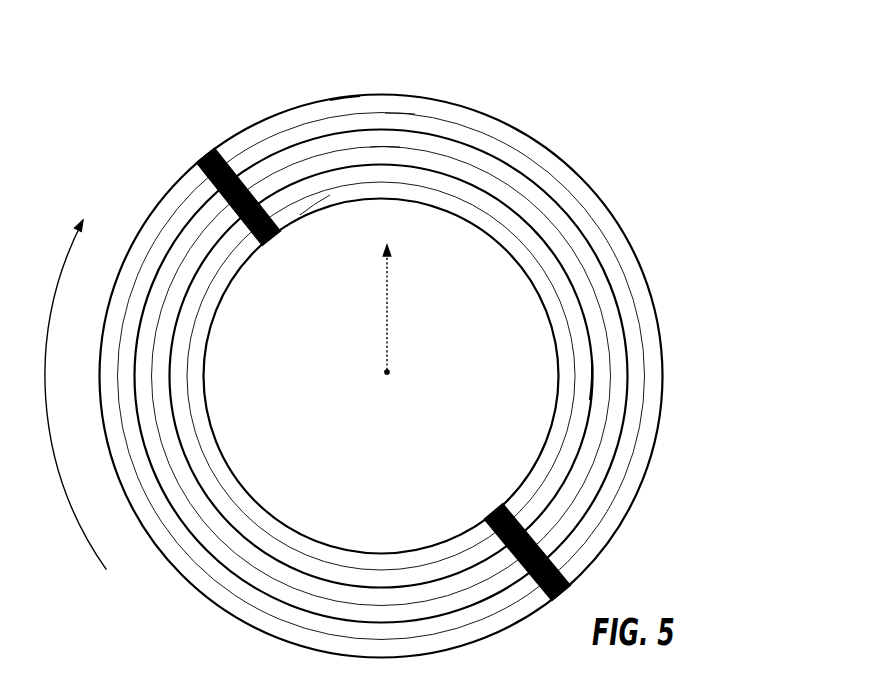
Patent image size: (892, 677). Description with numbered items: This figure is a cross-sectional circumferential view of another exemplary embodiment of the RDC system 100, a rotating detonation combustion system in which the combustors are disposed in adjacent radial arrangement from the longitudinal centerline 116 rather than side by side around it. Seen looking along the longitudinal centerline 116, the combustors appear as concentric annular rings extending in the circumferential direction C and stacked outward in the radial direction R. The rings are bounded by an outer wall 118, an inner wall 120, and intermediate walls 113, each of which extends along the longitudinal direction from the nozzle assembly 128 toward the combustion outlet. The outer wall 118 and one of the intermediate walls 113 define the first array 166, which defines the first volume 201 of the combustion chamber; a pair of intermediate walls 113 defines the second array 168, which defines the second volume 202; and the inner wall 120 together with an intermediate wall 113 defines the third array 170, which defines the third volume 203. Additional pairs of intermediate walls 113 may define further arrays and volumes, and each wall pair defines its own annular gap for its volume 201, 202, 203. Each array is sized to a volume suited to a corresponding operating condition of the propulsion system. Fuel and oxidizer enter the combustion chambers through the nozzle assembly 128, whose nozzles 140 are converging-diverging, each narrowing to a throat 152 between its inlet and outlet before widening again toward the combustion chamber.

The RDC system 100 is at (718, 95).
The intermediate wall 113 is at (593, 378).
The longitudinal centerline 116 is at (390, 372).
The outer wall 118 is at (222, 136).
The inner wall 120 is at (363, 203).
The nozzle assembly 128 is at (520, 173).
The nozzle 140 is at (545, 257).
The throat 152 is at (473, 194).
The first array 166 is at (343, 95).
The second array 168 is at (384, 146).
The third array 170 is at (332, 184).
The first volume 201 is at (500, 125).
The second volume 202 is at (548, 207).
The third volume 203 is at (563, 288).
The radial direction R is at (388, 294).
The circumferential direction C is at (83, 413).